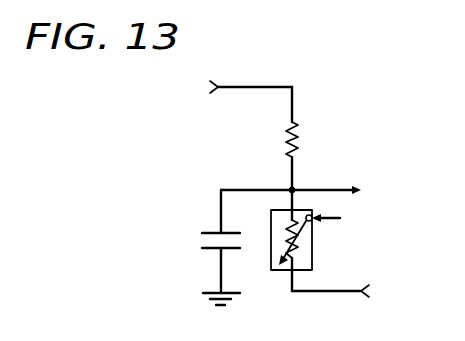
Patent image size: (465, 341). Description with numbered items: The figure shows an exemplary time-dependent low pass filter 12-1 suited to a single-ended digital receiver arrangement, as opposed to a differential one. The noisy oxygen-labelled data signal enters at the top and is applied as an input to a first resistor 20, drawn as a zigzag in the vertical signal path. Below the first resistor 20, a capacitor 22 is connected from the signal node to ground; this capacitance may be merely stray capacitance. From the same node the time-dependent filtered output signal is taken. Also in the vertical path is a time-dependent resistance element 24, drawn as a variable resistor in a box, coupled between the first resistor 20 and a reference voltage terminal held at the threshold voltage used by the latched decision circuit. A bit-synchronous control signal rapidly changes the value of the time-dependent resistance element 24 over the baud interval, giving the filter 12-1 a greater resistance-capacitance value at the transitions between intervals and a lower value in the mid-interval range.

The time-dependent low pass filter 12-1 is at (293, 183).
The first resistor 20 is at (284, 131).
The capacitor 22 is at (204, 240).
The time-dependent resistance element 24 is at (313, 256).